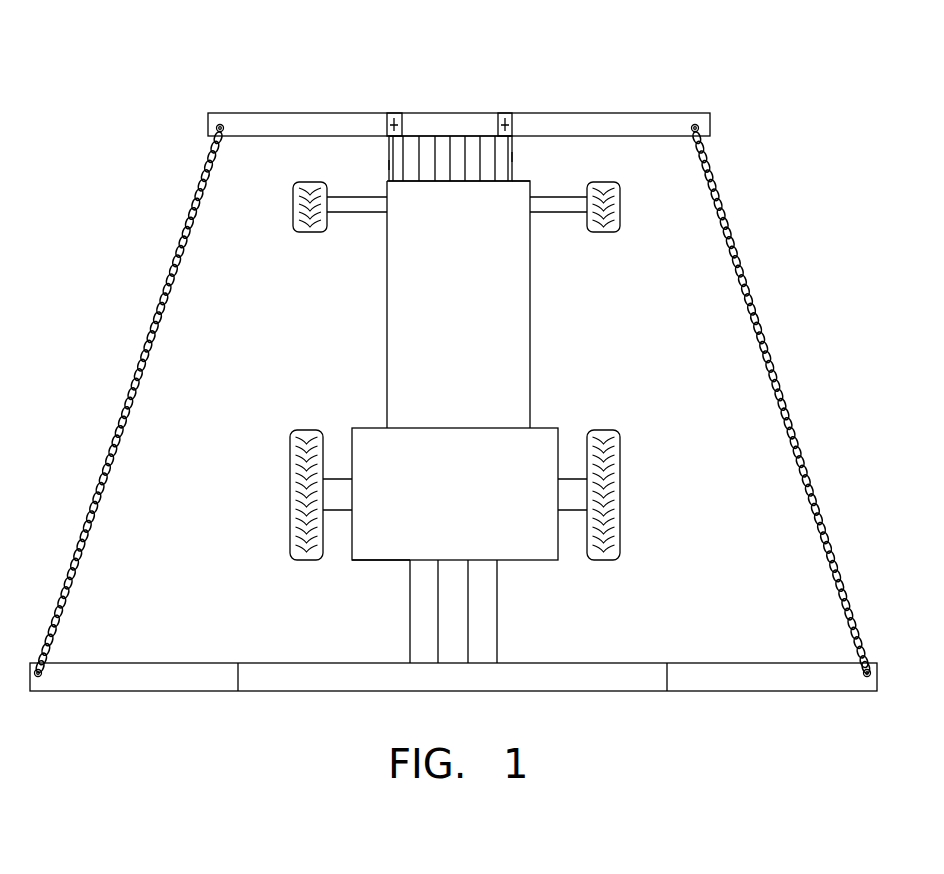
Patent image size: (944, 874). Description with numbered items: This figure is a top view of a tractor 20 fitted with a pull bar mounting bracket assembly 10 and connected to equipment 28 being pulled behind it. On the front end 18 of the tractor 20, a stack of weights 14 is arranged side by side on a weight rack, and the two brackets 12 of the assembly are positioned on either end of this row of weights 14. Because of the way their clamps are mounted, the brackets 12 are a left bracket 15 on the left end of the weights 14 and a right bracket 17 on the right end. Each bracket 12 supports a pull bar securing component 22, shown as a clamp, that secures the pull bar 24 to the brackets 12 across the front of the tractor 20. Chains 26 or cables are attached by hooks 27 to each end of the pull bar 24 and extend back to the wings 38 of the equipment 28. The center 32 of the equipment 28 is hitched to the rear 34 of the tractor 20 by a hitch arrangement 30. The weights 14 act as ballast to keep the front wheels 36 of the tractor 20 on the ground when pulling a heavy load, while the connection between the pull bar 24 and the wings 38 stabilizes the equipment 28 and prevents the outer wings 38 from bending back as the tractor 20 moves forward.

The pull bar mounting bracket assembly 10 is at (466, 100).
The brackets 12 is at (379, 163).
The weights 14 is at (455, 183).
The left bracket 15 is at (389, 144).
The right bracket 17 is at (512, 144).
The front end 18 is at (531, 177).
The tractor 20 is at (547, 432).
The pull bar securing component 22 is at (397, 104).
The pull bar 24 is at (636, 120).
The chains 26 is at (158, 295).
The hooks 27 is at (701, 128).
The equipment 28 is at (605, 668).
The hitch arrangement 30 is at (497, 592).
The center 32 is at (454, 663).
The rear 34 is at (380, 556).
The front wheels 36 is at (621, 212).
The wings 38 is at (178, 668).